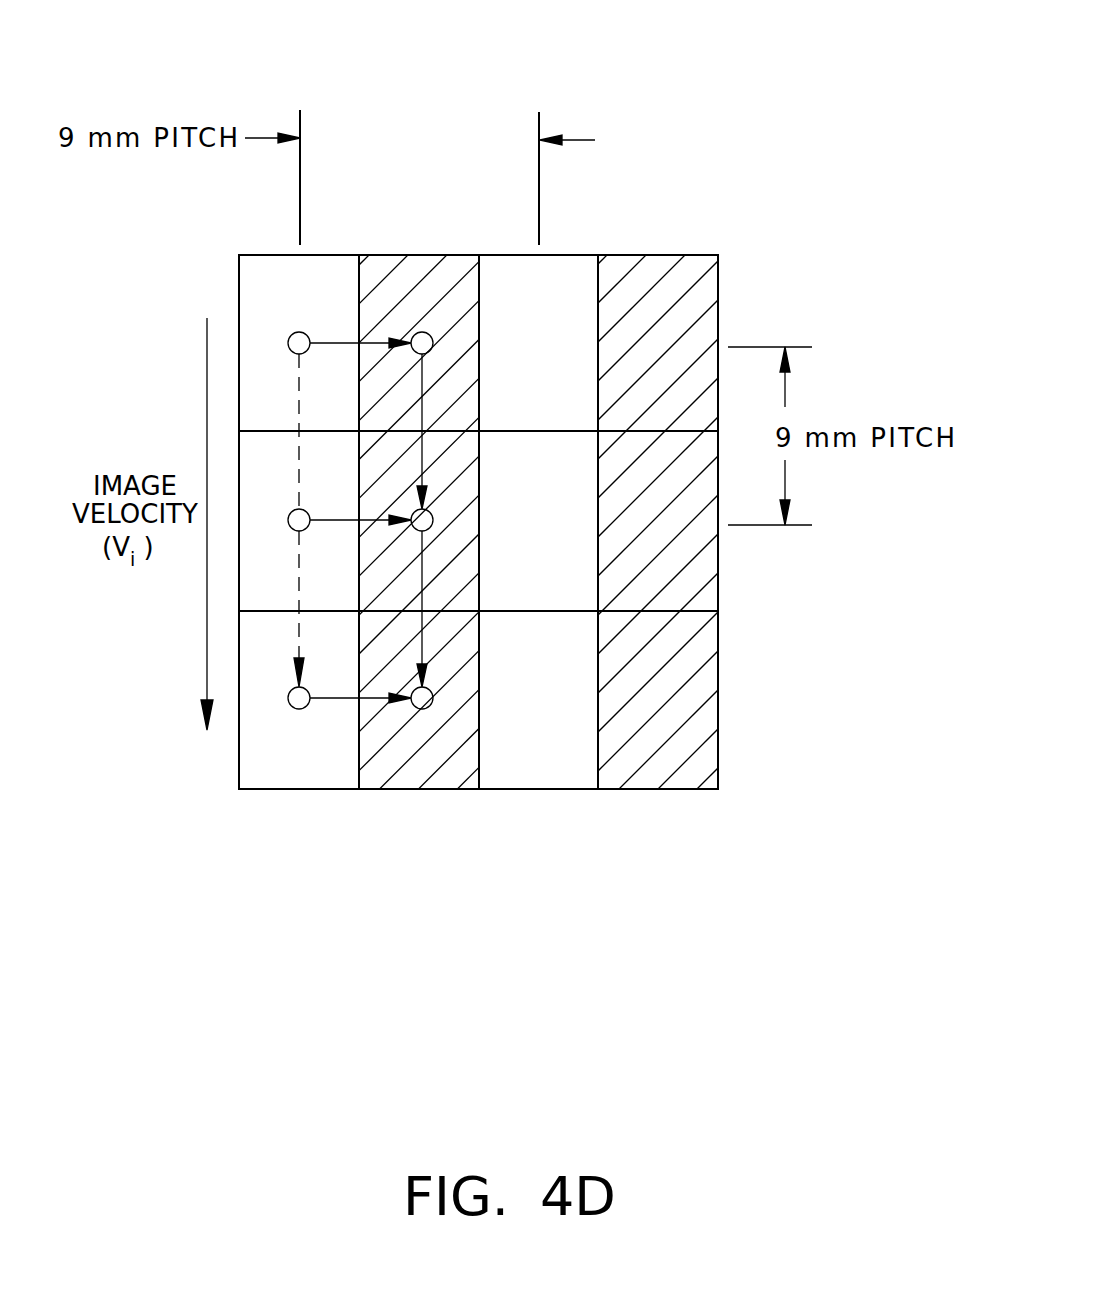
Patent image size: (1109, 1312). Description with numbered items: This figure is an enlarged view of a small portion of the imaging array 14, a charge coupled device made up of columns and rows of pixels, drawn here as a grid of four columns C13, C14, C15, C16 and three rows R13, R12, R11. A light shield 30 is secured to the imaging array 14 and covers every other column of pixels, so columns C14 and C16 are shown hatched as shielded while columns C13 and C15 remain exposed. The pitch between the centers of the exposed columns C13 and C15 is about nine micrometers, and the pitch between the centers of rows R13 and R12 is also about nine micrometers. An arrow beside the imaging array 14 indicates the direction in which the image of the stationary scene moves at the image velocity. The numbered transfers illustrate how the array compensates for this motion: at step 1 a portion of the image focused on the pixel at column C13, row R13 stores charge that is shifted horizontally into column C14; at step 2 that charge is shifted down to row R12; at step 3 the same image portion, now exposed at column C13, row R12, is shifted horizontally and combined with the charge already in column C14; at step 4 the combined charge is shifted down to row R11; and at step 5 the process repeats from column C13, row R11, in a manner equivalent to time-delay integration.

The imaging array 14 is at (786, 84).
The light shield 30 is at (452, 789).
The column C13 is at (310, 253).
The column C14 is at (428, 253).
The column C15 is at (548, 253).
The column C16 is at (668, 253).
The row R13 is at (719, 272).
The row R12 is at (718, 582).
The row R11 is at (718, 702).
The image step 1 is at (360, 328).
The image step 2 is at (432, 431).
The image step 3 is at (360, 504).
The image step 4 is at (431, 609).
The image step 5 is at (360, 682).